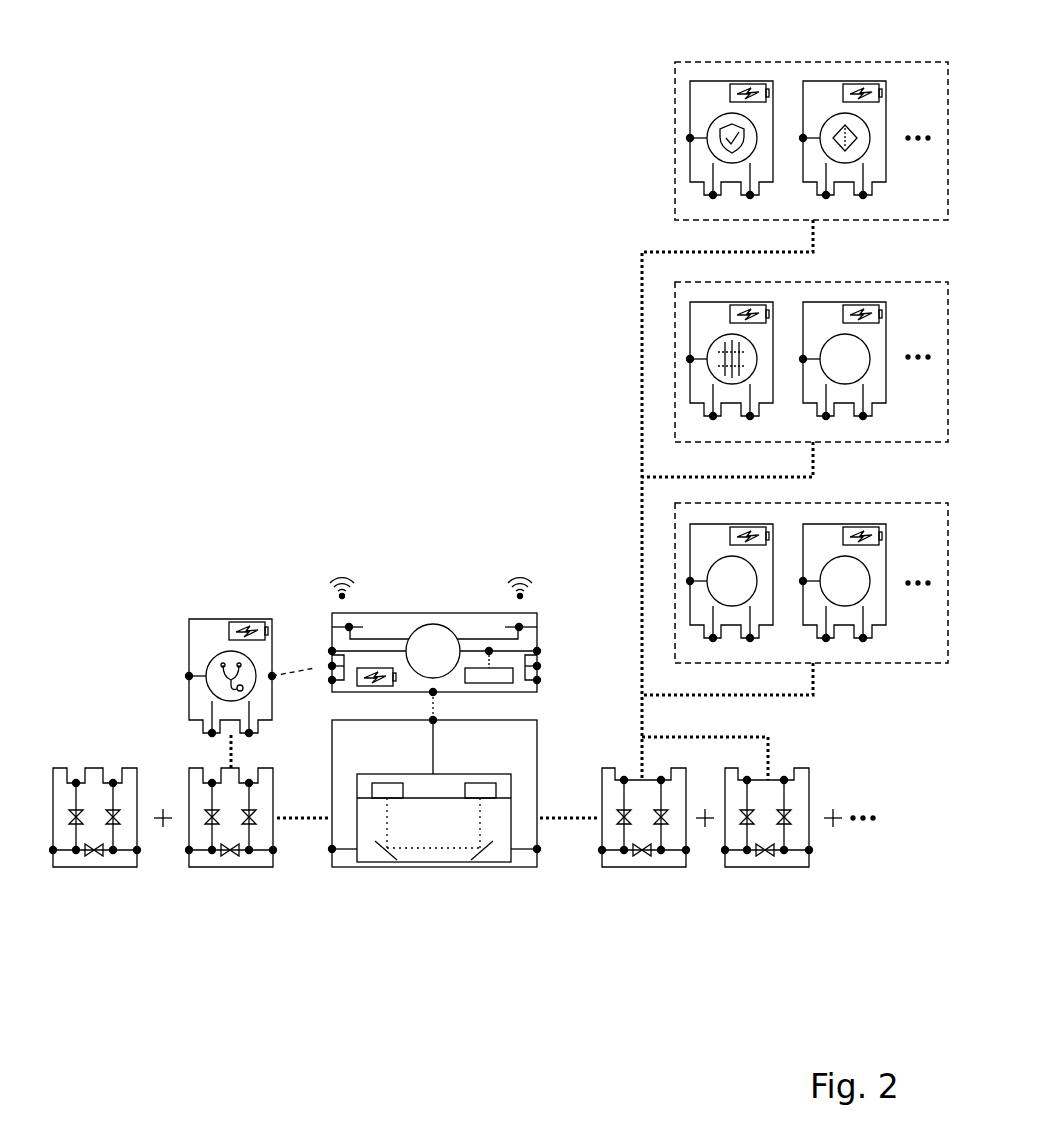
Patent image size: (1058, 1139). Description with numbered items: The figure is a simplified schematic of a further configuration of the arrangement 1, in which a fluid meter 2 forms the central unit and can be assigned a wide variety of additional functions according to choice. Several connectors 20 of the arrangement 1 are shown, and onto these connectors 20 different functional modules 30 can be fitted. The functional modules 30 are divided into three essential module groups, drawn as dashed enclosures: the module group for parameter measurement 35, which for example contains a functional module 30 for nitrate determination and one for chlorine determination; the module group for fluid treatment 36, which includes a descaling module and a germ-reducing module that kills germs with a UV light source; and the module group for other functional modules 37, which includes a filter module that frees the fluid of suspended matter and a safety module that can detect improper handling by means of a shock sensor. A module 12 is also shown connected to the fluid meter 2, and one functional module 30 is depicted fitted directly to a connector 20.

The arrangement 1 is at (487, 30).
The fluid meter 2 is at (352, 868).
The control module 12 is at (407, 613).
The connectors 20 is at (222, 868).
The functional module 30 is at (217, 620).
The module group for parameter measurement 35 is at (675, 530).
The module group for fluid treatment 36 is at (675, 313).
The module group for other functional modules 37 is at (677, 168).